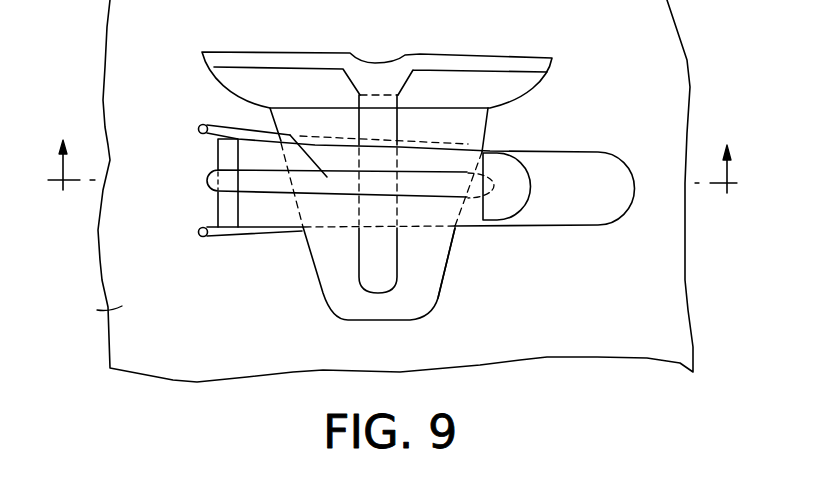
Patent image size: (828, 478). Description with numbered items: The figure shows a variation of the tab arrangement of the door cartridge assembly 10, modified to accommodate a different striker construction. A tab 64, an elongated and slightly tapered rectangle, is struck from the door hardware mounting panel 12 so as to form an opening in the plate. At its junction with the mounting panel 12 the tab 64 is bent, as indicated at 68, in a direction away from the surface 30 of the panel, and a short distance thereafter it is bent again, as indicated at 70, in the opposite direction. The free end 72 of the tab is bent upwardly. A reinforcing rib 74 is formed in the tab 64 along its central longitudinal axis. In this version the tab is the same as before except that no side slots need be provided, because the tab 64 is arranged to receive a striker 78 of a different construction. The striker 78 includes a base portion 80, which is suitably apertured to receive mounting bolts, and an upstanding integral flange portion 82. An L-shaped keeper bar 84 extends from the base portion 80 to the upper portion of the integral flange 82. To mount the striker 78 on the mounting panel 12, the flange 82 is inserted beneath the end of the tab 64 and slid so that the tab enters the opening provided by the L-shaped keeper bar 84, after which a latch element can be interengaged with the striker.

The door cartridge assembly 10 is at (399, 184).
The door hardware mounting panel 12 is at (532, 358).
The surface 30 is at (90, 310).
The tab 64 is at (427, 158).
The bend 68 is at (215, 208).
The bend 70 is at (230, 152).
The free end 72 is at (522, 198).
The reinforcing rib 74 is at (290, 135).
The striker 78 is at (533, 53).
The base portion 80 is at (518, 85).
The integral flange portion 82 is at (437, 268).
The L-shaped keeper bar 84 is at (367, 240).